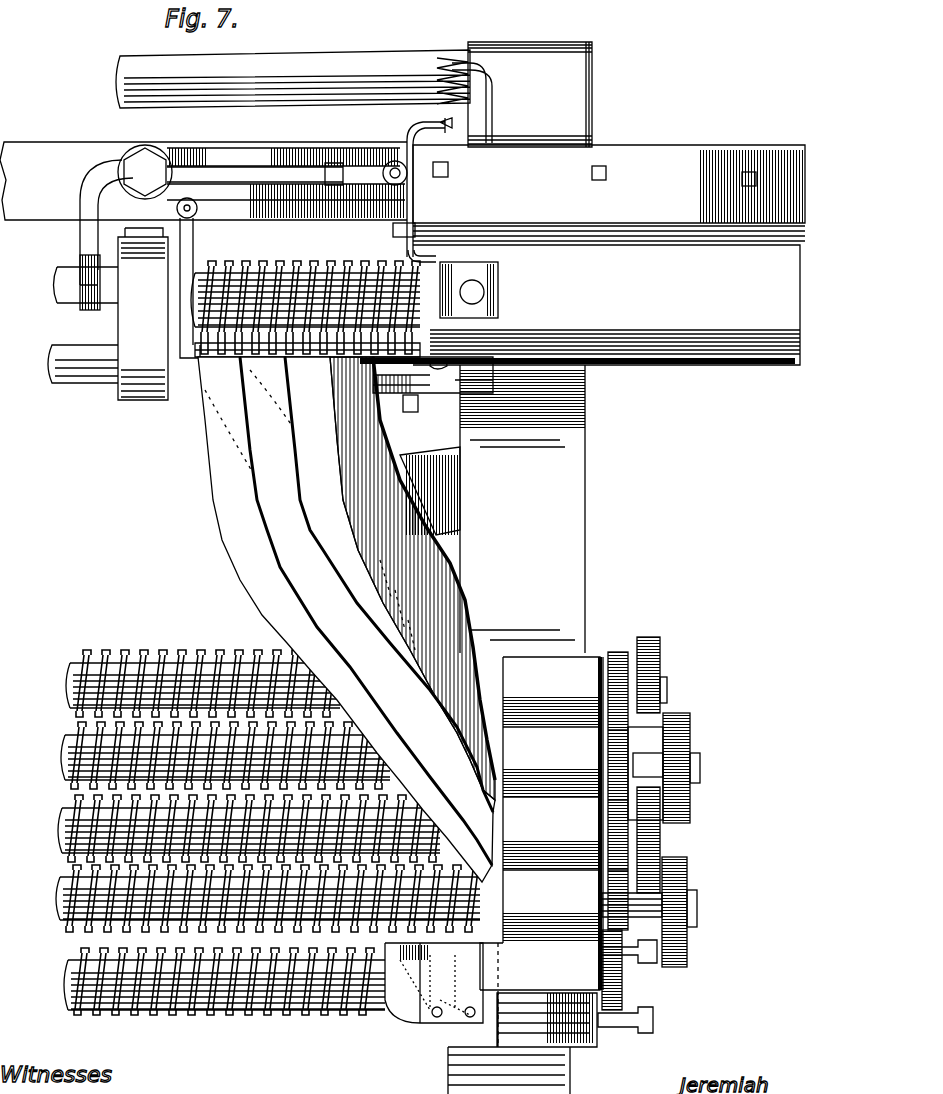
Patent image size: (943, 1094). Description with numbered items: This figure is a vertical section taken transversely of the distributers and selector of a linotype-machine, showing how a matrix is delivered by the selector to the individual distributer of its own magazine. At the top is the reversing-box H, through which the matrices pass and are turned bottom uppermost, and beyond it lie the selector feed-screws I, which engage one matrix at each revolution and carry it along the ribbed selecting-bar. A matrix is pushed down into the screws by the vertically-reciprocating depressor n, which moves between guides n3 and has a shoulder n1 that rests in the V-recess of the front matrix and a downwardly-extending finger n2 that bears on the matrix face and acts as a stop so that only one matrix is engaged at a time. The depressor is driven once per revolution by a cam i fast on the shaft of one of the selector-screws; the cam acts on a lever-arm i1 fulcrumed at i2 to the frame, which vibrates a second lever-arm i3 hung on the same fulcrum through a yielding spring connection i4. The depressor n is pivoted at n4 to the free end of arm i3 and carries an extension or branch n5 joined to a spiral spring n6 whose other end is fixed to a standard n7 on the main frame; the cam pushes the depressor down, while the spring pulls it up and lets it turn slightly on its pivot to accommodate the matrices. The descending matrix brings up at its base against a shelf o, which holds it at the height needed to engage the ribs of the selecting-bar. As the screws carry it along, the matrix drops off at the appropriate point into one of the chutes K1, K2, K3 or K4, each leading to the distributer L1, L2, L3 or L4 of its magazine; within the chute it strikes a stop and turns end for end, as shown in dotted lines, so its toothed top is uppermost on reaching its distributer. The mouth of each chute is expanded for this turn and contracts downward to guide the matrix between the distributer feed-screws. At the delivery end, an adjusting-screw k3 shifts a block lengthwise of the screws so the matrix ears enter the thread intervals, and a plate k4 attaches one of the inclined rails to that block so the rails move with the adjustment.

The spiral spring n6 is at (293, 79).
The standard n7 is at (492, 96).
The extension or branch n5 is at (404, 133).
The pivot n4 is at (440, 170).
The depressor n is at (412, 196).
The guides n3 is at (417, 228).
The shoulder n1 is at (426, 258).
The finger n2 is at (455, 262).
The box H is at (582, 255).
The post A is at (522, 509).
The shelf o is at (410, 415).
The feed-screws I is at (320, 268).
The cam i is at (85, 275).
The lever-arm i1 is at (112, 175).
The fulcrum i2 is at (138, 205).
The lever-arm i3 is at (220, 165).
The spring connection i4 is at (252, 175).
The chute or guideway K1 is at (412, 578).
The chute or guideway K2 is at (390, 584).
The chute or guideway K3 is at (366, 611).
The chute or guideway K4 is at (345, 619).
The distributer L1 is at (90, 672).
The distributer L2 is at (72, 746).
The distributer L3 is at (92, 820).
The distributer L4 is at (92, 938).
The adjusting-screw k3 is at (650, 964).
The plate k4 is at (410, 1000).